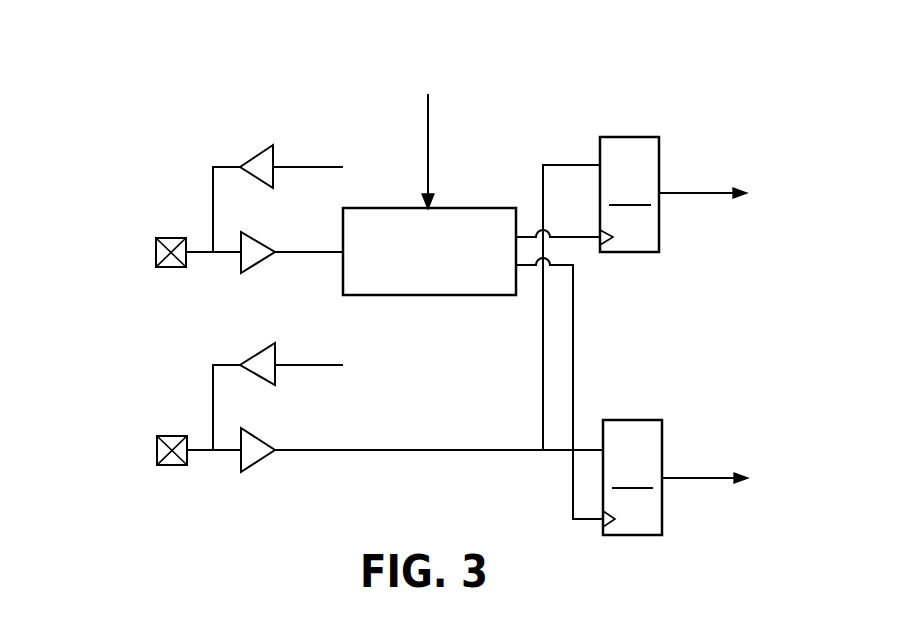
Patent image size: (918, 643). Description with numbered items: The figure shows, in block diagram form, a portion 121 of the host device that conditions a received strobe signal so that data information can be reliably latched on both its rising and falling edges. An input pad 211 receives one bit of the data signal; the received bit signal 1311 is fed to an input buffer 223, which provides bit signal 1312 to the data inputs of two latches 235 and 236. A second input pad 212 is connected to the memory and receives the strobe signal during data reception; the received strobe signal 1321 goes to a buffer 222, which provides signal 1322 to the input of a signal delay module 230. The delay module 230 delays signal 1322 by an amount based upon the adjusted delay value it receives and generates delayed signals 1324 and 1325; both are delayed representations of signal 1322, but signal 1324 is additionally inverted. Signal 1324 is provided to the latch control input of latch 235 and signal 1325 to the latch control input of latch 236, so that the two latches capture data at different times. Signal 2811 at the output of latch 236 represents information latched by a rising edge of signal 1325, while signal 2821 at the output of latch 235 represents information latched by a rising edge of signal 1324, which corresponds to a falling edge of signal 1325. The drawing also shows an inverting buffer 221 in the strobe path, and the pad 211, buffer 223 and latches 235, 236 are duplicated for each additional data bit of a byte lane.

The portion of host 121 is at (722, 76).
The input pad 211 is at (172, 466).
The input pad 212 is at (172, 268).
The inverting buffer 221 is at (254, 127).
The buffer 222 is at (257, 292).
The input buffer 223 is at (257, 492).
The signal delay module 230 is at (448, 293).
The latch 235 is at (298, 165).
The latch 236 is at (298, 363).
The received bit signal 1311 is at (198, 448).
The bit signal 1312 is at (283, 448).
The received strobe signal 1321 is at (198, 250).
The buffered strobe signal 1322 is at (283, 250).
The delayed signal 1324 is at (529, 236).
The delayed signal 1325 is at (574, 378).
The latch output signal 2811 is at (675, 477).
The latch output signal 2821 is at (673, 192).